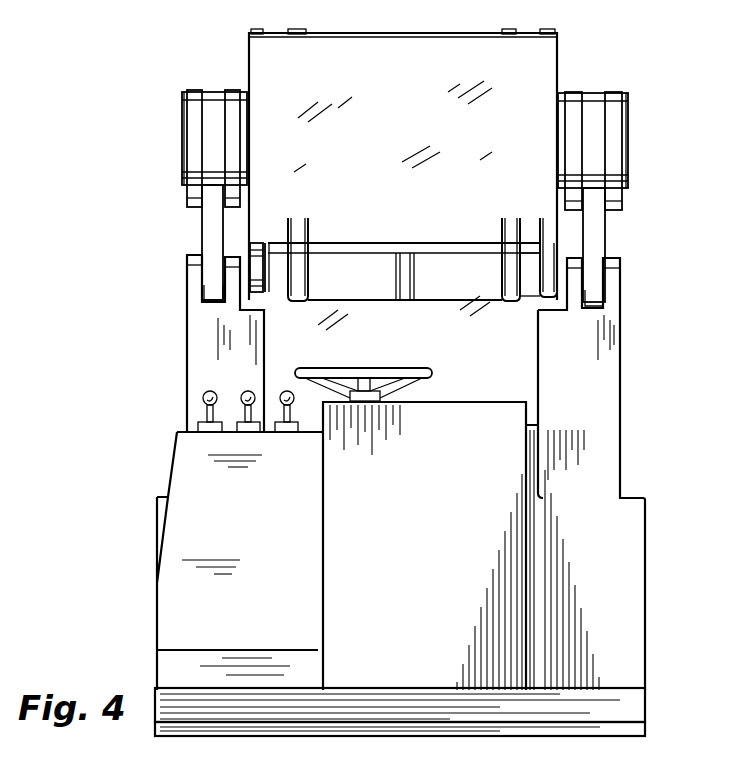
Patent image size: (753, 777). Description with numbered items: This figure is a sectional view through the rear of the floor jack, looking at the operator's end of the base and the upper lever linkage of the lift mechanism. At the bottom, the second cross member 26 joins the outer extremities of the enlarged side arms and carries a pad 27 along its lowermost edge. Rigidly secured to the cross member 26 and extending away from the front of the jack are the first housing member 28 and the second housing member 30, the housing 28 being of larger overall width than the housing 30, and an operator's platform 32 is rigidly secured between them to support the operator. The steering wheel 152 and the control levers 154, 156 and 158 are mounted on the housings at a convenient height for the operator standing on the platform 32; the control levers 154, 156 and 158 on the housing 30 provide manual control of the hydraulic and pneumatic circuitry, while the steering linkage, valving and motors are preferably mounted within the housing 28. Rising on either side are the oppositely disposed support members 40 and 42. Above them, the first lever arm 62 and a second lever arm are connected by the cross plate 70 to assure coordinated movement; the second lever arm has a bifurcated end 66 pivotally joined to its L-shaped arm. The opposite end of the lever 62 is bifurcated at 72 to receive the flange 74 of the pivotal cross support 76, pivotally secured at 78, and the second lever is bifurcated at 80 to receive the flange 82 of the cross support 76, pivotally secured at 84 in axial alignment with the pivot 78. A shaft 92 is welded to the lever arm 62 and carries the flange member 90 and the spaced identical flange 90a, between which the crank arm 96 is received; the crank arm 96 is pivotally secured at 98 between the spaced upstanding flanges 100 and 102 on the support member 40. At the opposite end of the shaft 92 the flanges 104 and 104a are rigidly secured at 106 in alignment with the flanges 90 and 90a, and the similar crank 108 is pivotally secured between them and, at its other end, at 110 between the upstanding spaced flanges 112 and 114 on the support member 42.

The second cross member 26 is at (630, 690).
The pad 27 is at (648, 728).
The first housing member 28 is at (455, 430).
The second housing member 30 is at (190, 480).
The operator's platform 32 is at (195, 665).
The support member 40 is at (598, 405).
The support member 42 is at (210, 340).
The first lever arm 62 is at (528, 33).
The bifurcated end 66 is at (278, 33).
The cross plate 70 is at (380, 85).
The bifurcated end 72 is at (510, 282).
The flange 74 is at (530, 243).
The pivotal cross support 76 is at (345, 318).
The pivot connection 78 is at (533, 270).
The bifurcated end 80 is at (297, 272).
The flange 82 is at (268, 248).
The pivot connection 84 is at (266, 250).
The flange member 90 is at (615, 97).
The flange 90a is at (575, 95).
The shaft 92 is at (630, 128).
The crank arm 96 is at (600, 225).
The pivot connection 98 is at (612, 273).
The upstanding flange 100 is at (615, 290).
The upstanding flange 102 is at (568, 282).
The flange 104 is at (190, 95).
The flange 104a is at (235, 92).
The rigid connection 106 is at (183, 120).
The crank 108 is at (212, 228).
The pivot connection 110 is at (210, 275).
The upstanding flange 112 is at (195, 257).
The upstanding flange 114 is at (232, 285).
The steering wheel 152 is at (372, 368).
The control lever 154 is at (203, 402).
The control lever 156 is at (245, 396).
The control lever 158 is at (290, 391).